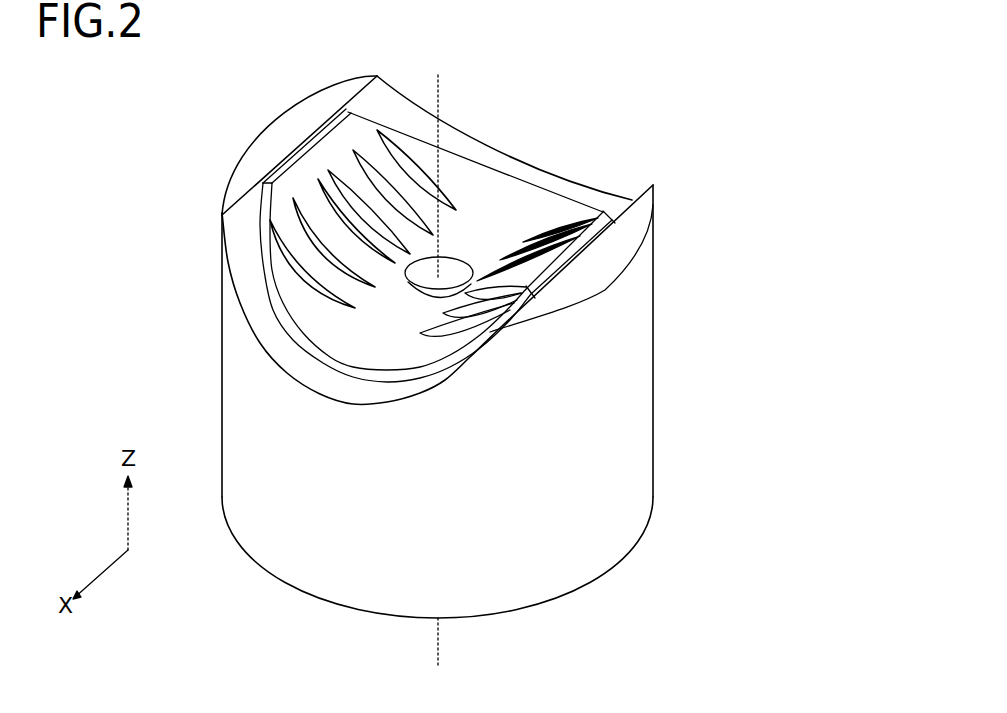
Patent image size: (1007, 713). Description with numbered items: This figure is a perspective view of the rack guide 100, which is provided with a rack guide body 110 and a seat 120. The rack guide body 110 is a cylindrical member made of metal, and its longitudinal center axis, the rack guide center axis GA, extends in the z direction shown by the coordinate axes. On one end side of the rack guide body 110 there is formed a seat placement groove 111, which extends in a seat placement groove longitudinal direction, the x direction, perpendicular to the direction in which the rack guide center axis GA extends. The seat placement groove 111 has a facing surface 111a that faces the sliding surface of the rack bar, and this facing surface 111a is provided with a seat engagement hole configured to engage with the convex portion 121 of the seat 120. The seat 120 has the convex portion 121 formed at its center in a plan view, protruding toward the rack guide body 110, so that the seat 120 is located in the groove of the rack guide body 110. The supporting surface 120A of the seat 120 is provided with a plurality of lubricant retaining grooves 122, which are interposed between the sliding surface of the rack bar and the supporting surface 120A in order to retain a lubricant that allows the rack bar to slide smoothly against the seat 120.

The rack guide 100 is at (716, 122).
The rack guide body 110 is at (640, 274).
The seat placement groove 111 is at (262, 330).
The facing surface 111a is at (596, 198).
The seat 120 is at (600, 200).
The supporting surface 120A is at (488, 183).
The convex portion 121 is at (450, 268).
The lubricant retaining grooves 122 is at (338, 108).
The rack guide center axis GA is at (441, 82).